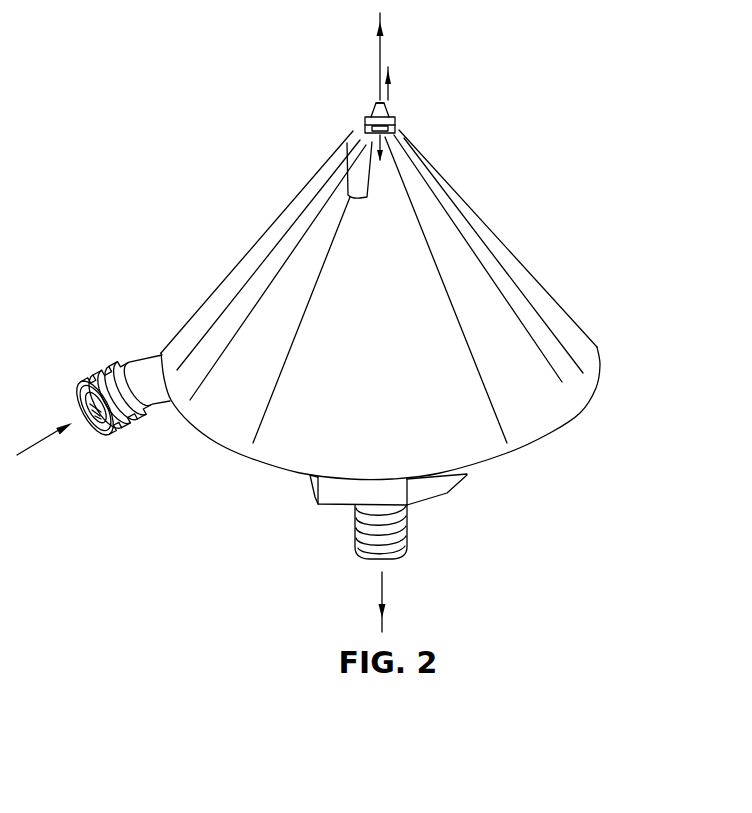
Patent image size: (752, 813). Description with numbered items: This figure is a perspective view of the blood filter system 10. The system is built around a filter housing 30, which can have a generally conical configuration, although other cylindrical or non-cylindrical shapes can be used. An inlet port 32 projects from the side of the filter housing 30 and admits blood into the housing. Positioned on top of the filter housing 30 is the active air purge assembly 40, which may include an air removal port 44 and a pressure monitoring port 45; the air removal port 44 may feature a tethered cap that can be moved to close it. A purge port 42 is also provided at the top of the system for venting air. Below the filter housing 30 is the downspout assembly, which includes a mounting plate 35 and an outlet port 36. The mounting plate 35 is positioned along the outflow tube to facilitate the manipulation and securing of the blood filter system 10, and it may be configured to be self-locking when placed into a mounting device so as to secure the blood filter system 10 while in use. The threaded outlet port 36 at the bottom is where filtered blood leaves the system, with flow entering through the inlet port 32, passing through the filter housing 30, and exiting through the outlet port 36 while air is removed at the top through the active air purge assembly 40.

The blood filter system 10 is at (180, 179).
The filter housing 30 is at (531, 268).
The inlet port 32 is at (108, 365).
The mounting plate 35 is at (437, 497).
The outlet port 36 is at (397, 565).
The active air purge assembly 40 is at (345, 197).
The purge port 42 is at (373, 105).
The air removal port 44 is at (366, 118).
The pressure monitoring port 45 is at (394, 128).